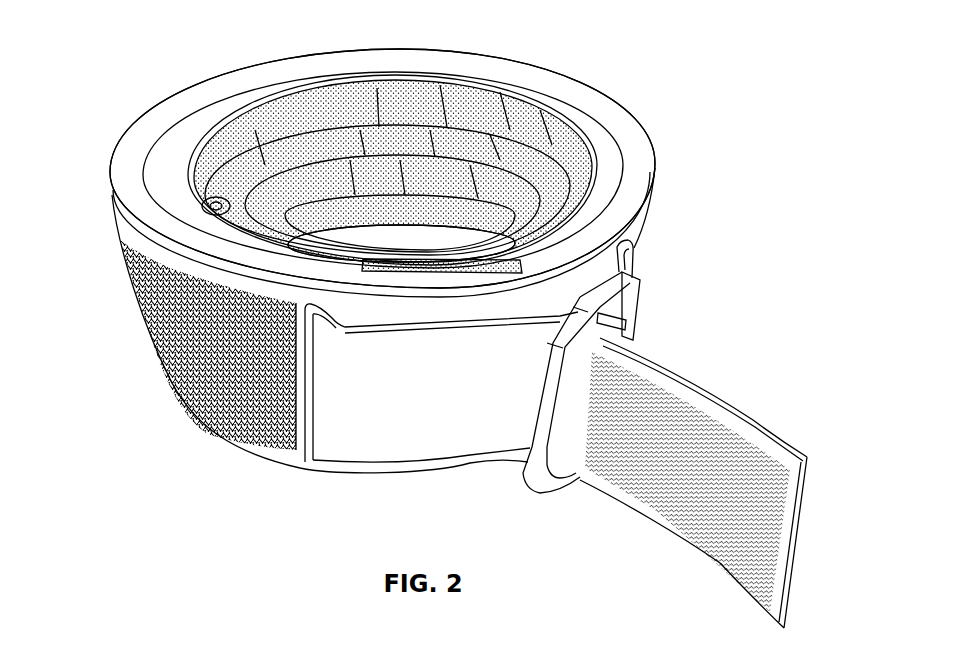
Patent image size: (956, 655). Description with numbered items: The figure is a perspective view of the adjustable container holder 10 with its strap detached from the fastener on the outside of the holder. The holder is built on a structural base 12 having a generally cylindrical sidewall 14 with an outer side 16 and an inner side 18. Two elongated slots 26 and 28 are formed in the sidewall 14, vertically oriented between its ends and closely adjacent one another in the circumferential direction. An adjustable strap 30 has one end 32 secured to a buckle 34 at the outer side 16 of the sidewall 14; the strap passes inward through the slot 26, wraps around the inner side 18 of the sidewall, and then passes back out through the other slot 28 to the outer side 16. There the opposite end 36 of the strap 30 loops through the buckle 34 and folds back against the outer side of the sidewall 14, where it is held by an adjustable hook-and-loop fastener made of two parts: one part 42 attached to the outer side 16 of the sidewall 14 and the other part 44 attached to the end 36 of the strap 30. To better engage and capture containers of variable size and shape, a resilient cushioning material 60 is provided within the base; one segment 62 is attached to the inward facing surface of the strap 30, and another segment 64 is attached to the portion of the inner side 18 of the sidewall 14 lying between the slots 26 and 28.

The adjustable container holder 10 is at (662, 58).
The structural base 12 is at (664, 157).
The cylindrical sidewall 14 is at (122, 148).
The outer side 16 is at (480, 308).
The inner side 18 is at (183, 132).
The slot 26 is at (625, 243).
The slot 28 is at (330, 316).
The adjustable strap 30 is at (406, 450).
The end of strap 32 is at (622, 328).
The buckle 34 is at (635, 297).
The end of strap 36 is at (752, 408).
The part of hook-and-loop fastener 42 is at (215, 435).
The part of hook-and-loop fastener 44 is at (716, 550).
The resilient cushioning material 60 is at (497, 72).
The segment of cushioning material 62 is at (335, 95).
The segment of cushioning material 64 is at (422, 258).